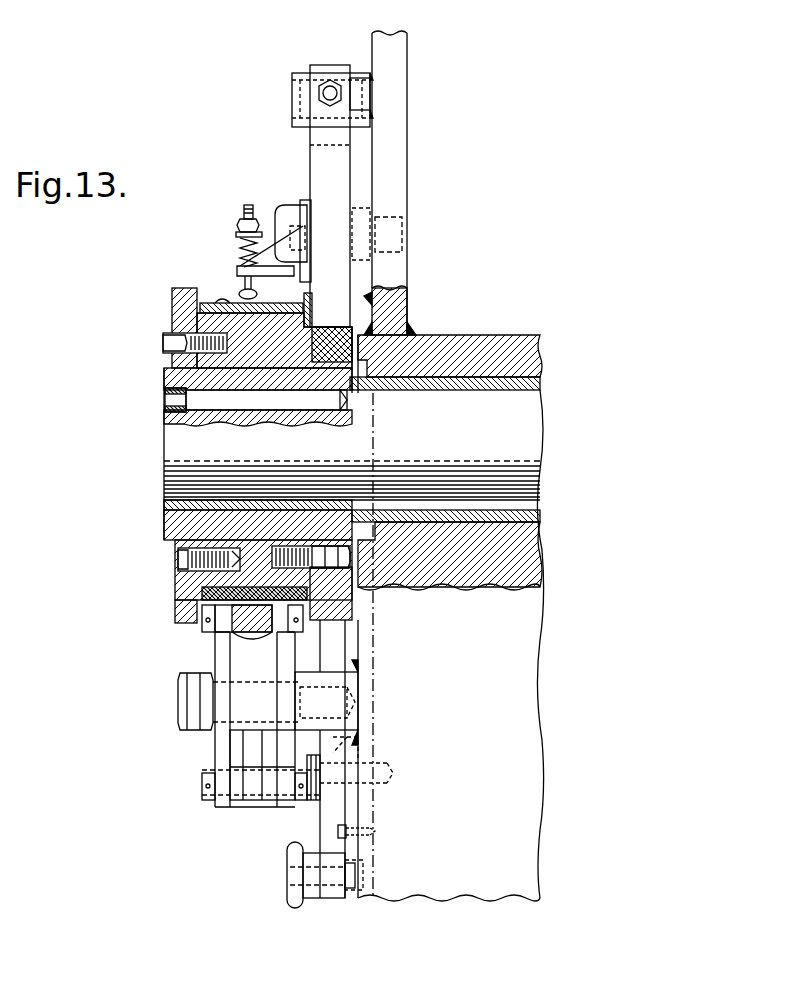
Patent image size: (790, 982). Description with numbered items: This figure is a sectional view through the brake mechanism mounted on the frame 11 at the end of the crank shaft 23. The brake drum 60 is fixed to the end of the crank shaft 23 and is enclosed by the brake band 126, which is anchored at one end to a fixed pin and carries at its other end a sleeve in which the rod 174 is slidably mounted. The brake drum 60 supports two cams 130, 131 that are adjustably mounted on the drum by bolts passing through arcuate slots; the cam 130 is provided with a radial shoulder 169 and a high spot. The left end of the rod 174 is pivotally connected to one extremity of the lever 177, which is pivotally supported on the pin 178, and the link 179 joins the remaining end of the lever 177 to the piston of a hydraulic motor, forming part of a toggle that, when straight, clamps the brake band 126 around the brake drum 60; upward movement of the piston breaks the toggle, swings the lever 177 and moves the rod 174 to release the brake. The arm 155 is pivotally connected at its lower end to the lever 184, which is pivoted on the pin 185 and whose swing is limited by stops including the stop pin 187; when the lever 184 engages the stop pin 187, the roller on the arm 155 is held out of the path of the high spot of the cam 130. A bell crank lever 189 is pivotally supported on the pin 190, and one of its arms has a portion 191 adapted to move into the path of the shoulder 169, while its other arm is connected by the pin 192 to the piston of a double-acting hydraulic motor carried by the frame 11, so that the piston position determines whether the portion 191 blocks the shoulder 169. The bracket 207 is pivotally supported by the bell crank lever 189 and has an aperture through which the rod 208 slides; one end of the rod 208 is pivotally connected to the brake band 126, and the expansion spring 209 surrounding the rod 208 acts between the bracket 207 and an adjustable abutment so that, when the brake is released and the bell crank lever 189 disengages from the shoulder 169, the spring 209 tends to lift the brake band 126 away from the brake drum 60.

The frame 11 is at (397, 141).
The crank shaft 23 is at (175, 449).
The brake drum 60 is at (175, 526).
The brake band 126 is at (236, 301).
The cam 130 is at (348, 604).
The cam 131 is at (172, 306).
The arm 155 is at (340, 654).
The radial shoulder 169 is at (340, 321).
The rod 174 is at (236, 631).
The lever 177 is at (223, 651).
The pin 178 is at (180, 706).
The link 179 is at (237, 749).
The lever 184 is at (331, 897).
The pin 185 is at (356, 741).
The stop pin 187 is at (338, 831).
The bell crank lever 189 is at (327, 159).
The pin 190 is at (270, 235).
The portion of bell crank lever 191 is at (340, 298).
The pin 192 is at (292, 105).
The bracket 207 is at (258, 270).
The rod 208 is at (247, 208).
The expansion spring 209 is at (235, 234).